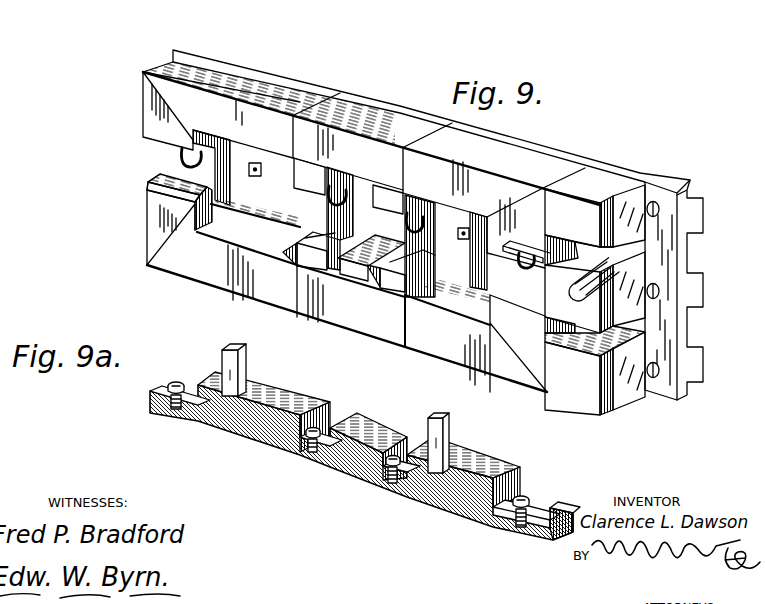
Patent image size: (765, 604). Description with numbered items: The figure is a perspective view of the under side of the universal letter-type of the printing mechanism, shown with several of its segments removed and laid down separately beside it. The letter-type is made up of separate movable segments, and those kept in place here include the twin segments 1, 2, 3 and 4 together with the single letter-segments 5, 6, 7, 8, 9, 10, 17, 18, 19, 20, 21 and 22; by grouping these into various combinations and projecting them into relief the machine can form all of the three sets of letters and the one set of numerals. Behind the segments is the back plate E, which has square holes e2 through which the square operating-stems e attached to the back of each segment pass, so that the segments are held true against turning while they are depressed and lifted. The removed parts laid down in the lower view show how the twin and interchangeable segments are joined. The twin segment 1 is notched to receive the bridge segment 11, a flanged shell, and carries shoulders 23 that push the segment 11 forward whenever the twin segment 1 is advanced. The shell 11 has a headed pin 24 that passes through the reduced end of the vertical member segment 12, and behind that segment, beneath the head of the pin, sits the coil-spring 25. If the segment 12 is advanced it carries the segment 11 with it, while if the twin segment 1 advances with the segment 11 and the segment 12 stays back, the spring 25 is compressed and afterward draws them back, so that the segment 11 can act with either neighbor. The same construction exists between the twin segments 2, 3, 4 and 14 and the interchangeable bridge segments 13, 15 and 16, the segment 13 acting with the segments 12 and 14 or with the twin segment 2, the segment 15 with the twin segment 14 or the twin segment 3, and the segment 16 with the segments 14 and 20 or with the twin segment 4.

In FIG. 9, the back plate E is at (190, 57).
In FIG. 9, the twin segment 1 is at (177, 168).
In FIG. 9, the twin segment 2 is at (311, 214).
In FIG. 9, the twin segment 3 is at (401, 238).
In FIG. 9, the twin segment 4 is at (517, 290).
In FIG. 9, the letter-segment 5 is at (259, 281).
In FIG. 9, the letter-segment 6 is at (351, 305).
In FIG. 9, the letter-segment 7 is at (447, 340).
In FIG. 9, the letter-segment 8 is at (243, 129).
In FIG. 9, the letter-segment 9 is at (348, 153).
In FIG. 9, the letter-segment 10 is at (445, 183).
In FIG. 9, the letter-segment 17 is at (247, 248).
In FIG. 9, the letter-segment 18 is at (371, 258).
In FIG. 9, the letter-segment 19 is at (565, 372).
In FIG. 9, the letter-segment 20 is at (595, 284).
In FIG. 9, the letter-segment 21 is at (595, 216).
In FIG. 9, the letter-segment 22 is at (524, 392).
In FIG. 9, the shoulders 23 is at (208, 130).
In FIG. 9, the square hole e2 is at (250, 164).
In FIG. 9A, the bridge segment 11 is at (200, 381).
In FIG. 9A, the vertical member segment 12 is at (168, 386).
In FIG. 9A, the bridge segment 13 is at (327, 470).
In FIG. 9A, the twin segment 14 is at (363, 473).
In FIG. 9A, the bridge segment 15 is at (387, 490).
In FIG. 9A, the bridge segment 16 is at (567, 502).
In FIG. 9A, the headed pin 24 is at (163, 389).
In FIG. 9A, the coil-spring 25 is at (172, 407).
In FIG. 9A, the operating-stem e is at (238, 355).